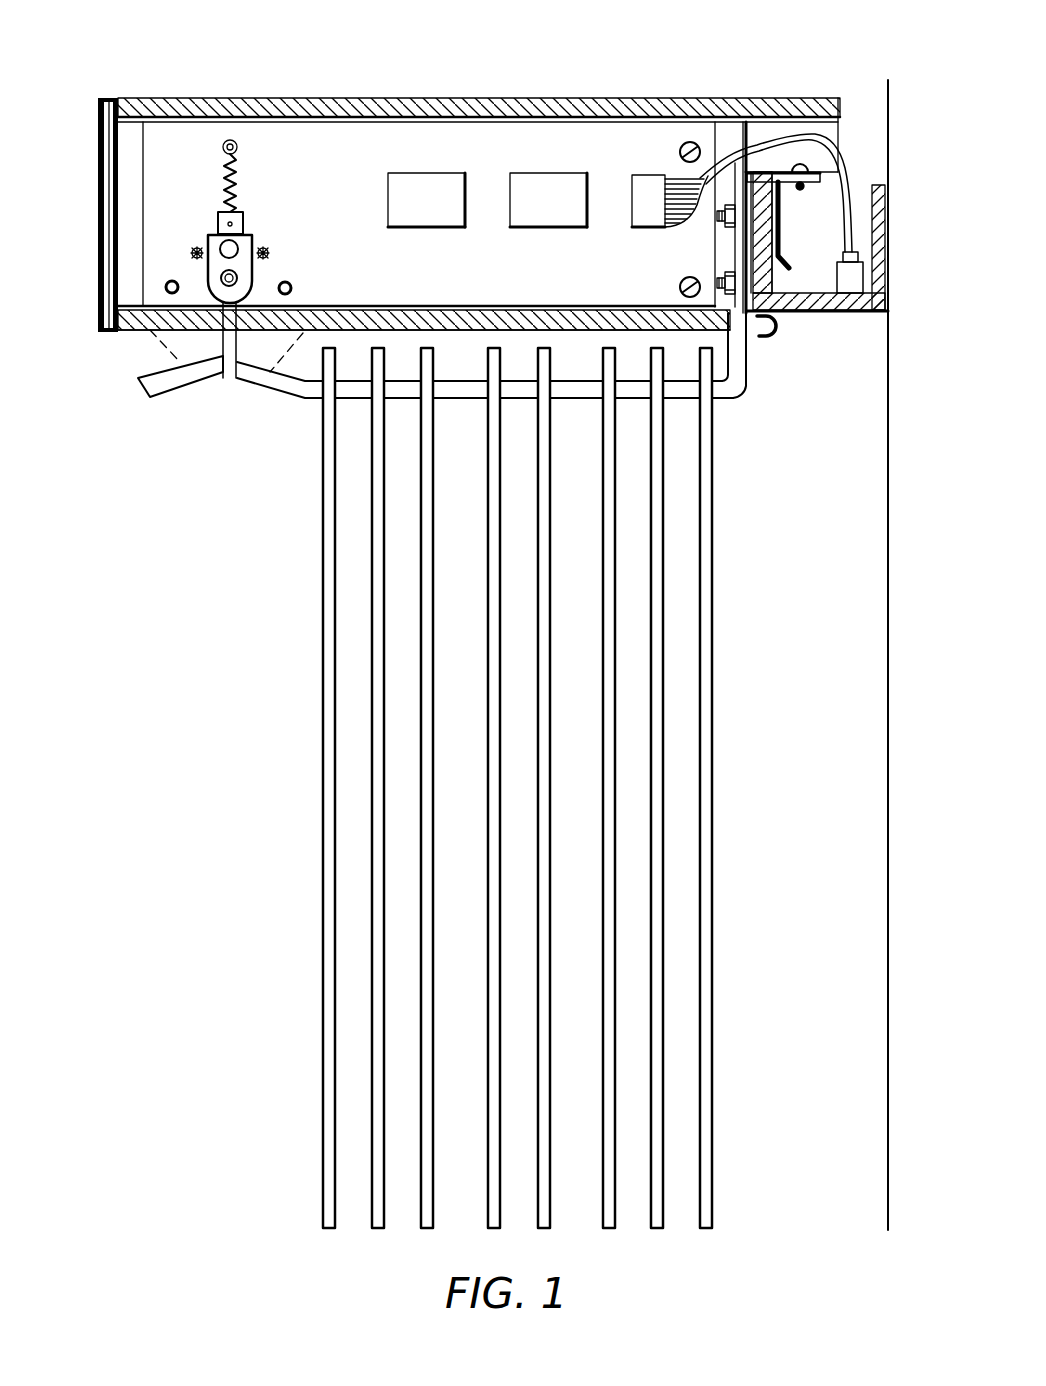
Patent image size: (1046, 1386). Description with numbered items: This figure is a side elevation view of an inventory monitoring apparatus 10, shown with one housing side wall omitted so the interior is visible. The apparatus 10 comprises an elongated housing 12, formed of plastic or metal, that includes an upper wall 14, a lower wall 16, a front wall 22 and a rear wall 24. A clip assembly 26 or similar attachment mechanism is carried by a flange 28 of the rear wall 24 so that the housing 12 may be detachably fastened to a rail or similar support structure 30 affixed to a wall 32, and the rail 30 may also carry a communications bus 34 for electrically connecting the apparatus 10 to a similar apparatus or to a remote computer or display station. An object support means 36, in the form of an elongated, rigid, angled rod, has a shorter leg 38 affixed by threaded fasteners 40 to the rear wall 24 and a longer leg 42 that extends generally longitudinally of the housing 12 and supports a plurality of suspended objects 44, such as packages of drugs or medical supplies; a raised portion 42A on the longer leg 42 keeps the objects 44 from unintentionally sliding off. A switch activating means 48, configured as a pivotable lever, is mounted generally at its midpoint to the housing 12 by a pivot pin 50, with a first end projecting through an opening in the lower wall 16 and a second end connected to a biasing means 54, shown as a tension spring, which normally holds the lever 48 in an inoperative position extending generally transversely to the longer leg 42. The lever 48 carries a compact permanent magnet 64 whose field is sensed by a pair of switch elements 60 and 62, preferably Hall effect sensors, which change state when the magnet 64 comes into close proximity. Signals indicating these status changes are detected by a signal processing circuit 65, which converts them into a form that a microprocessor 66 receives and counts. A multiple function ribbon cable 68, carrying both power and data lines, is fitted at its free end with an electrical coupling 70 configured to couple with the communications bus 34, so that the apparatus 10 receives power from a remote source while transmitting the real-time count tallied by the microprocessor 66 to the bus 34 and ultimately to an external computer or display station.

The inventory monitoring apparatus 10 is at (403, 76).
The housing 12 is at (306, 92).
The upper wall 14 is at (503, 183).
The lower wall 16 is at (430, 305).
The front wall 22 is at (100, 163).
The rear wall 24 is at (795, 216).
The clip assembly 26 is at (788, 252).
The flange 28 is at (776, 168).
The rail 30 is at (790, 313).
The wall 32 is at (887, 553).
The communications bus 34 is at (845, 312).
The object support means 36 is at (758, 390).
The shorter leg 38 is at (748, 378).
The threaded fasteners 40 is at (717, 222).
The longer leg 42 is at (445, 382).
The raised portion 42A is at (250, 382).
The objects 44 is at (323, 510).
The switch activating means 48 is at (237, 248).
The pivot pin 50 is at (262, 292).
The biasing means 54 is at (240, 180).
The switch element 60 is at (268, 257).
The switch element 62 is at (197, 258).
The permanent magnet 64 is at (253, 237).
The signal processing circuit 65 is at (427, 173).
The microprocessor 66 is at (547, 173).
The ribbon cable 68 is at (672, 173).
The electrical coupling 70 is at (862, 268).